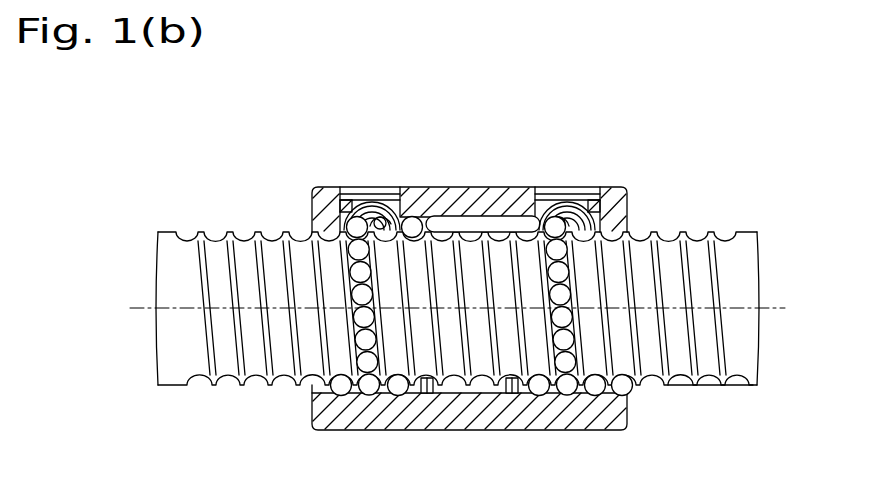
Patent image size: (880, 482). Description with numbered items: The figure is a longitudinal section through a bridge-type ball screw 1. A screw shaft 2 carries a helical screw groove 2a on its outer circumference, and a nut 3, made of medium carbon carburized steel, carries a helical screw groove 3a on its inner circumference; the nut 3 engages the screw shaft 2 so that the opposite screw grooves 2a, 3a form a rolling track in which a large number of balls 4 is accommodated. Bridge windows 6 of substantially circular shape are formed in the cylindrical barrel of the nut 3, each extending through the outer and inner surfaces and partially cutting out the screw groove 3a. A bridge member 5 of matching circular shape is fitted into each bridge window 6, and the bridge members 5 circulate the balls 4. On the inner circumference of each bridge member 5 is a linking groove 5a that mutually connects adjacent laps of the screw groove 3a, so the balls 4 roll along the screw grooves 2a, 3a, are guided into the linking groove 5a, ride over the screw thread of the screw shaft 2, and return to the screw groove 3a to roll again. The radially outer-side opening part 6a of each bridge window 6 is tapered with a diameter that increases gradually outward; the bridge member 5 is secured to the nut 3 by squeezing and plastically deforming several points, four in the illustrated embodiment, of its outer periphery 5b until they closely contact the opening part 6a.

The bridge-type ball screw 1 is at (628, 150).
The screw shaft 2 is at (700, 231).
The helical screw groove 2a is at (702, 352).
The nut 3 is at (447, 186).
The helical screw groove 3a is at (398, 378).
The balls 4 is at (566, 362).
The bridge member 5 is at (345, 186).
The linking groove 5a is at (368, 186).
The outer periphery 5b is at (355, 186).
The bridge window 6 is at (389, 186).
The opening part 6a is at (338, 186).